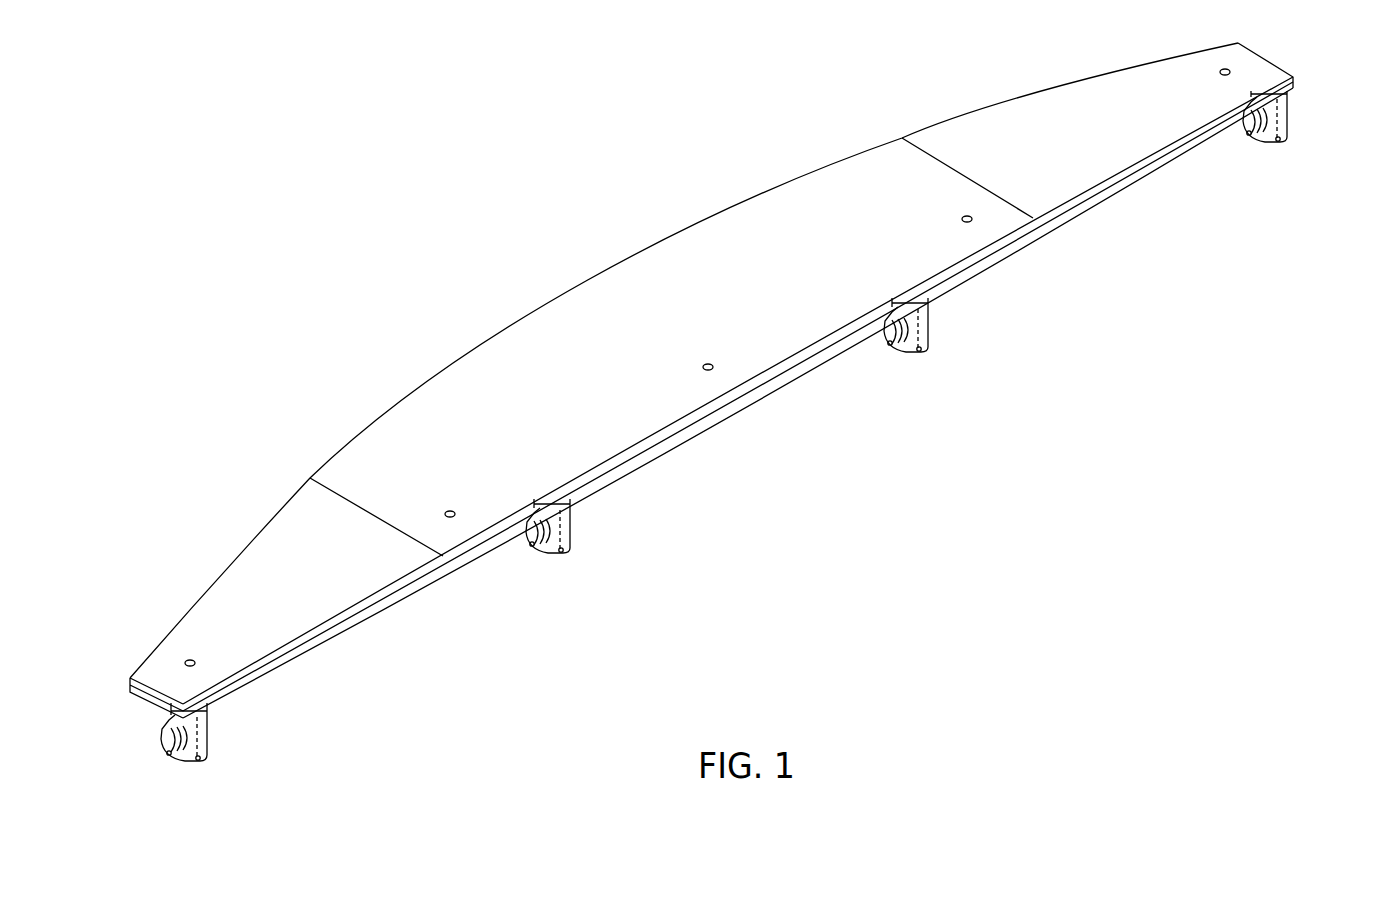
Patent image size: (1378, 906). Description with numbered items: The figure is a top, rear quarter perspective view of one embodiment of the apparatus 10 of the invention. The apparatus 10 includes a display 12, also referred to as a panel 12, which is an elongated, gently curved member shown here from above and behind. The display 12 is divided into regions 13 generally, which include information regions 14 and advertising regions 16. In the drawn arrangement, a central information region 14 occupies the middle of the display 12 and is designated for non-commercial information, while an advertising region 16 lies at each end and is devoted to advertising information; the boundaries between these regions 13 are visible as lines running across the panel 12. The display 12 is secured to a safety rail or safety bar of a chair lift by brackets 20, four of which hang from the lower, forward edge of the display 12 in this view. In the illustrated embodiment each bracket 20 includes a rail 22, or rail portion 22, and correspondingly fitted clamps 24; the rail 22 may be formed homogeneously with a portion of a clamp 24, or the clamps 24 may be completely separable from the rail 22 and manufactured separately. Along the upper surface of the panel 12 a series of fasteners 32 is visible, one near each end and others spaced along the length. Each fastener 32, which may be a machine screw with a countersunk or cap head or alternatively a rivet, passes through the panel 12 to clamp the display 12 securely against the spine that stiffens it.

The apparatus 10 is at (743, 435).
The display 12 is at (716, 374).
The regions 13 is at (260, 532).
The information region 14 is at (648, 316).
The advertising region 16 is at (279, 574).
The bracket 20 is at (750, 463).
The rail 22 is at (210, 713).
The clamp 24 is at (207, 742).
The fastener 32 is at (193, 658).